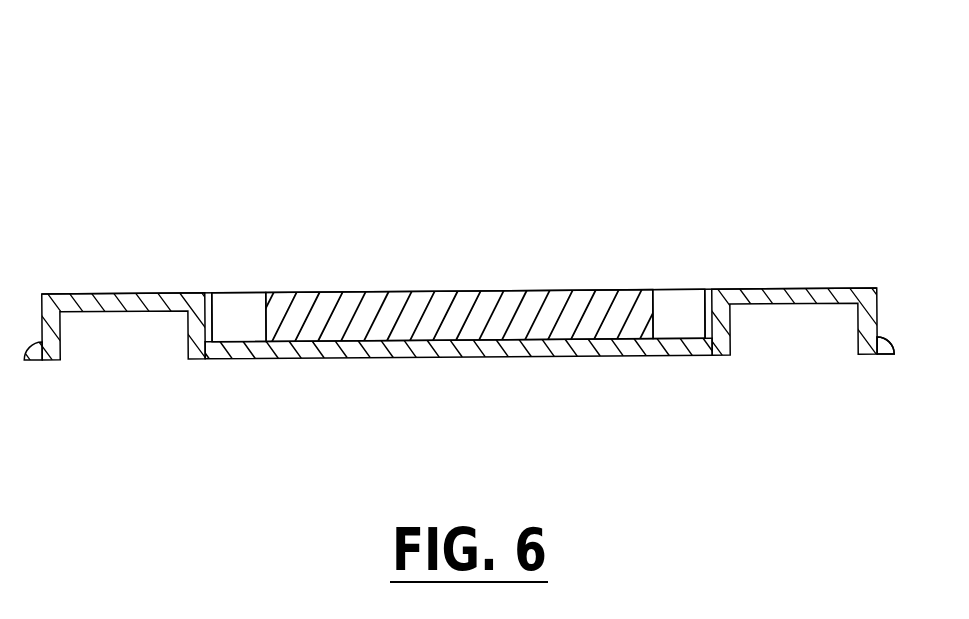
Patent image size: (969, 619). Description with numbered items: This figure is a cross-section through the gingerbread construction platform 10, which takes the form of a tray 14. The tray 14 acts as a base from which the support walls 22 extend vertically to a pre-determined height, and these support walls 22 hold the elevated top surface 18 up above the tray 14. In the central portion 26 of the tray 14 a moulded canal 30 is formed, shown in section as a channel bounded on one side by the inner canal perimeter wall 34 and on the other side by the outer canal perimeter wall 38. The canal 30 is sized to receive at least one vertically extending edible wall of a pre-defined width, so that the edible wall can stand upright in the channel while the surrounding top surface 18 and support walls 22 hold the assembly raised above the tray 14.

The gingerbread construction platform 10 is at (740, 98).
The tray 14 is at (885, 355).
The top surface 18 is at (137, 293).
The support walls 22 is at (877, 315).
The central portion 26 is at (384, 293).
The moulded canal 30 is at (239, 315).
The inner canal perimeter wall 34 is at (525, 314).
The outer canal perimeter wall 38 is at (213, 318).